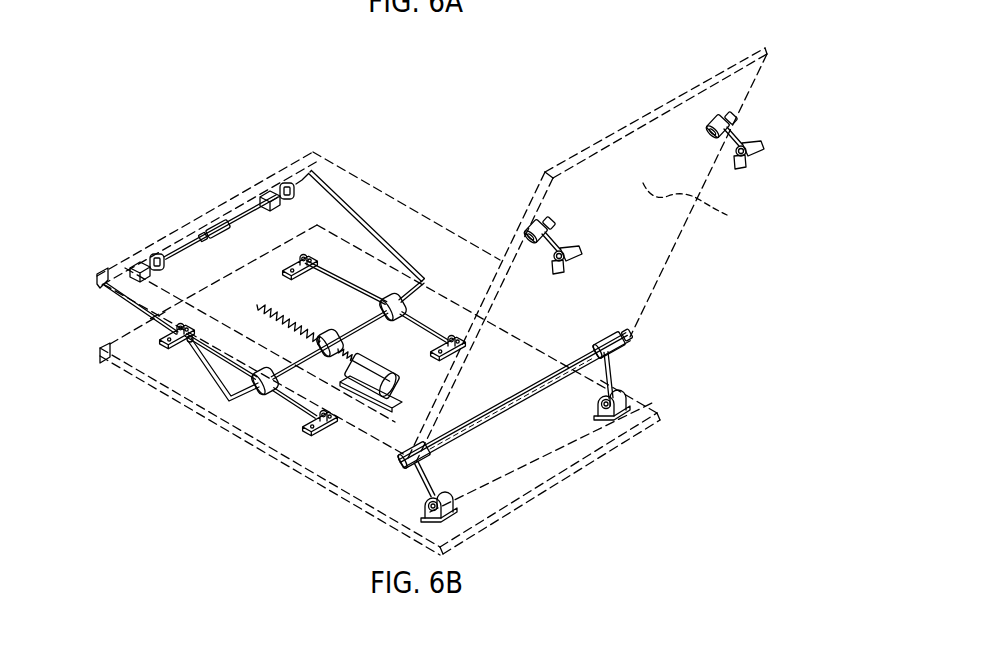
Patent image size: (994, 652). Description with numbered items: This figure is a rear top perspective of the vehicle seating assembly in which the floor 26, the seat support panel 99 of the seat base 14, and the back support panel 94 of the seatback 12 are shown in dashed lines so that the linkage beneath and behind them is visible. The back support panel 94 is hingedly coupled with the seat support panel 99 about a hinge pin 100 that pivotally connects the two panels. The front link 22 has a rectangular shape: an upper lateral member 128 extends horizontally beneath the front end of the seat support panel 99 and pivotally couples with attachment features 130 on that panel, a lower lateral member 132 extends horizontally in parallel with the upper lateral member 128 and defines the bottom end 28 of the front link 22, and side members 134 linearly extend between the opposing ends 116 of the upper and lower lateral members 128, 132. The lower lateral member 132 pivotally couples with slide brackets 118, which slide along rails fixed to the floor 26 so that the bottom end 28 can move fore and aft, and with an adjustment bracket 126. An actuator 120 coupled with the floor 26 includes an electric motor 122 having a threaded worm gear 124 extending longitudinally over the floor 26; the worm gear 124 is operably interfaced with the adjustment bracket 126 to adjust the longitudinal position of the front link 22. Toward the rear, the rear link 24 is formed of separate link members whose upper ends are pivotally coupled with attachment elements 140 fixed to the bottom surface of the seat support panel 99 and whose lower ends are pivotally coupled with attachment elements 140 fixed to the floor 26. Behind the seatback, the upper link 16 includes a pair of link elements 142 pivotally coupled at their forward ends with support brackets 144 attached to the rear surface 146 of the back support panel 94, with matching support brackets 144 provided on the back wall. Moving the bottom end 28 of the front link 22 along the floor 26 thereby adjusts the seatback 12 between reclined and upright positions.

The seatback 12 is at (675, 58).
The seat base 14 is at (434, 146).
The upper link 16 is at (679, 192).
The front link 22 is at (143, 314).
The rear link 24 is at (613, 367).
The floor 26 is at (405, 505).
The bottom end 28 is at (190, 388).
The back support panel 94 is at (673, 243).
The seat support panel 99 is at (367, 433).
The hinge pin 100 is at (403, 458).
The opposing ends 116 is at (340, 345).
The slide bracket 118 is at (390, 300).
The actuator 120 is at (428, 339).
The electric motor 122 is at (375, 352).
The threaded worm gear 124 is at (255, 302).
The adjustment bracket 126 is at (362, 340).
The upper lateral member 128 is at (232, 217).
The attachment features 130 is at (287, 180).
The lower lateral member 132 is at (388, 337).
The side members 134 is at (330, 340).
The attachment elements 140 is at (613, 318).
The link elements 142 is at (567, 248).
The support brackets 144 is at (547, 226).
The rear surface 146 is at (699, 209).